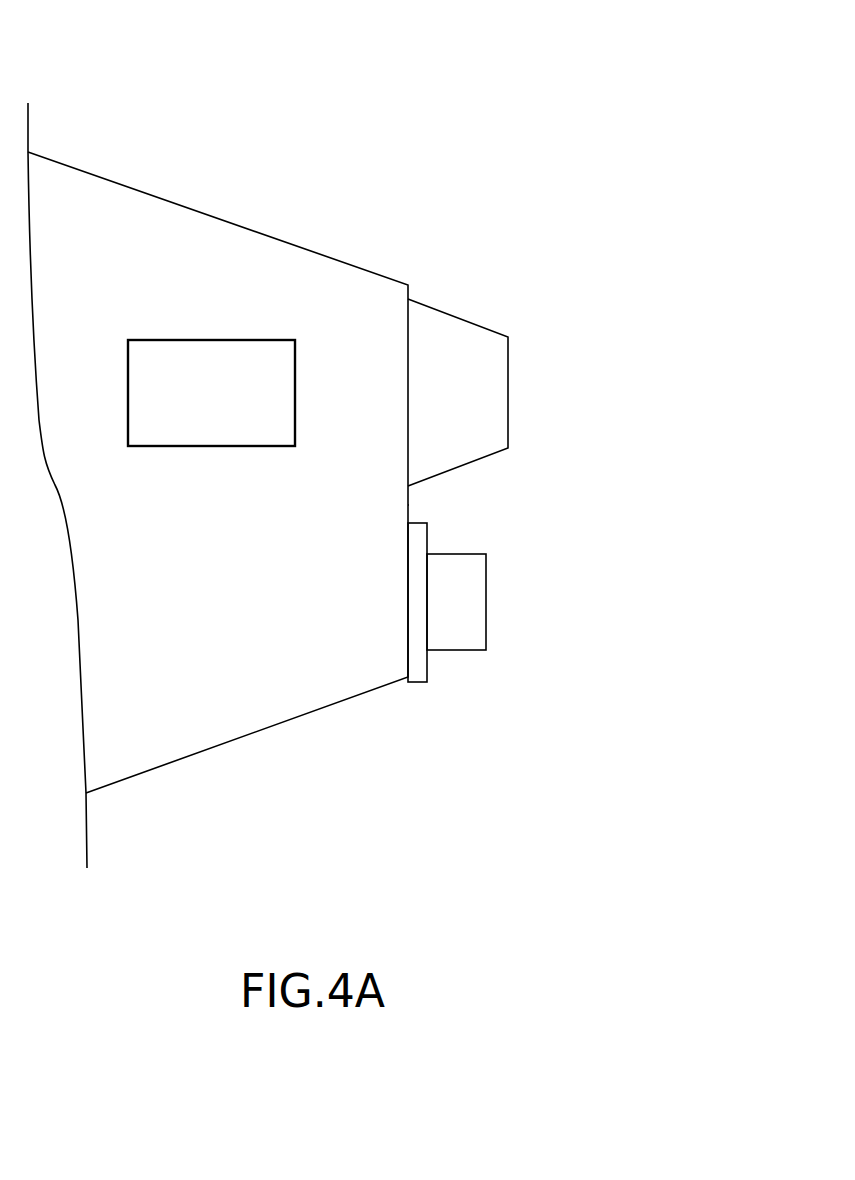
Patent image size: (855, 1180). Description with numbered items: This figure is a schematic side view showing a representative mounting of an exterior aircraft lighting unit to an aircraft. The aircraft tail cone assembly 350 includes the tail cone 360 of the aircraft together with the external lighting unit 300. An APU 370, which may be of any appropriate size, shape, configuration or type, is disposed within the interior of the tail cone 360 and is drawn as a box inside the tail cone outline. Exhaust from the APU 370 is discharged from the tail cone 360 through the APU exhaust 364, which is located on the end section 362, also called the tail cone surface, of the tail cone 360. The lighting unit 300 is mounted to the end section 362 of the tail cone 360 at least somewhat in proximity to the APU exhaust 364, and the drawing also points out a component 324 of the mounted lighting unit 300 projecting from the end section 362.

The aircraft tail cone assembly 350 is at (360, 443).
The tail cone 360 is at (110, 180).
The APU exhaust 364 is at (460, 317).
The APU 370 is at (229, 401).
The end section 362 is at (408, 505).
The connector box 324 is at (526, 602).
The external lighting unit 300 is at (550, 662).